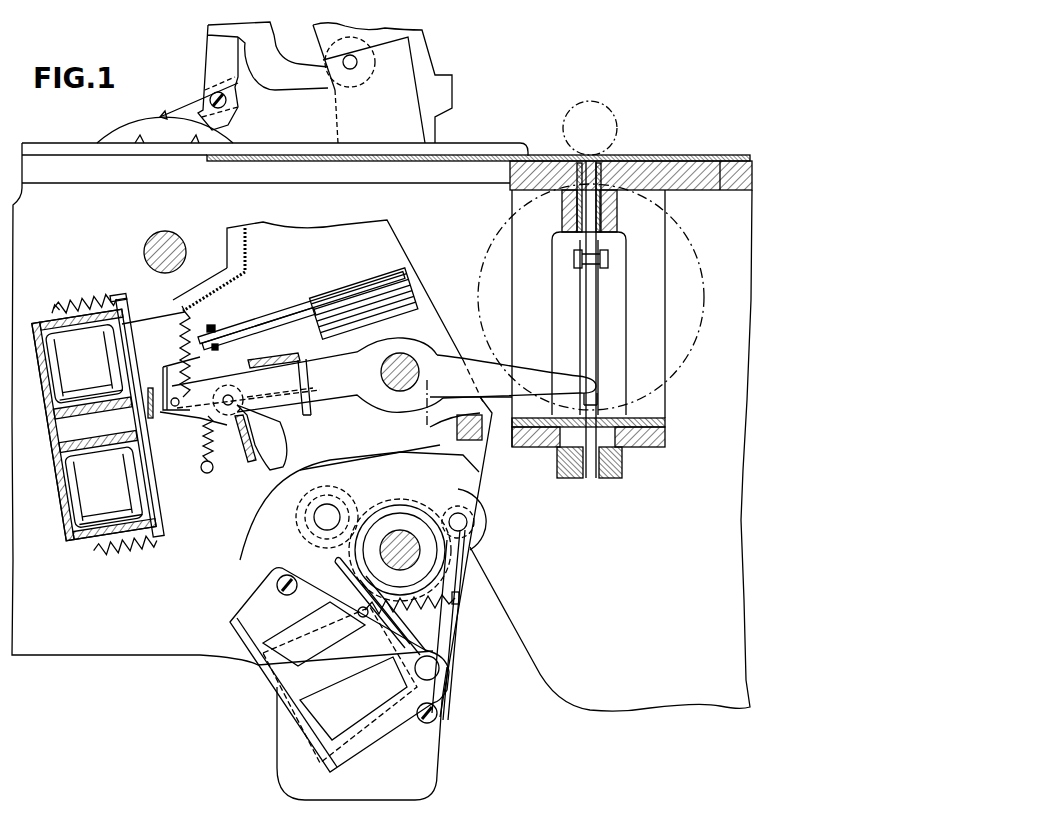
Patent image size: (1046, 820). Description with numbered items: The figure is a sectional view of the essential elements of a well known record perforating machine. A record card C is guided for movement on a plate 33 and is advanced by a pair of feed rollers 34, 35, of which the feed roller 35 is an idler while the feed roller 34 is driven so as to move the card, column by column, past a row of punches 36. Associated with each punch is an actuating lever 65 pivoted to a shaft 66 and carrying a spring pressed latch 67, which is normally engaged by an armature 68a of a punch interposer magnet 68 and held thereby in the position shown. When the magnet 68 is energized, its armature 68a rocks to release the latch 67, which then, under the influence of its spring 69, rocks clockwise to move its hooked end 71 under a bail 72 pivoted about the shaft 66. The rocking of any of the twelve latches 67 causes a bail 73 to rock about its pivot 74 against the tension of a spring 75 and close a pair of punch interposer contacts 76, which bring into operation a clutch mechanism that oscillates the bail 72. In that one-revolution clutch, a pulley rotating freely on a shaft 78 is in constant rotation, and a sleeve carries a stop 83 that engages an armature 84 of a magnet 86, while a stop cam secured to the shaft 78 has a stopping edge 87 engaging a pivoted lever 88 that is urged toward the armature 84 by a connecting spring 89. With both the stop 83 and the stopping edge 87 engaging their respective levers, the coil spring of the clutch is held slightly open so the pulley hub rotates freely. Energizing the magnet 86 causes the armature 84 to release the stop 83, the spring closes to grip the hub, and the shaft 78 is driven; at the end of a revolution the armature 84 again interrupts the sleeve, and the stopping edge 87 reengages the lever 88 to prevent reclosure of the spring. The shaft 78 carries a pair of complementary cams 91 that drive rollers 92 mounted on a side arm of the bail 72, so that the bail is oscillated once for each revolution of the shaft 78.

The plate 33 is at (482, 178).
The record card C is at (690, 165).
The feed roller 34 is at (712, 282).
The feed roller 35 is at (615, 138).
The punches 36 is at (598, 244).
The actuating lever 65 is at (525, 385).
The shaft 66 is at (405, 362).
The spring pressed latch 67 is at (196, 416).
The punch interposer magnet 68 is at (90, 490).
The armature 68a is at (185, 343).
The spring 69 is at (185, 330).
The hooked end 71 is at (272, 470).
The bail 72 is at (246, 462).
The bail 73 is at (163, 367).
The pivot 74 is at (330, 420).
The spring 75 is at (222, 446).
The punch interposer contacts 76 is at (227, 343).
The shaft 78 is at (395, 535).
The stop 83 is at (348, 575).
The armature 84 is at (390, 617).
The magnet 86 is at (298, 630).
The stopping edge 87 is at (470, 548).
The pivoted lever 88 is at (450, 628).
The connecting spring 89 is at (458, 590).
The complementary cams 91 is at (420, 507).
The rollers 92 is at (365, 472).